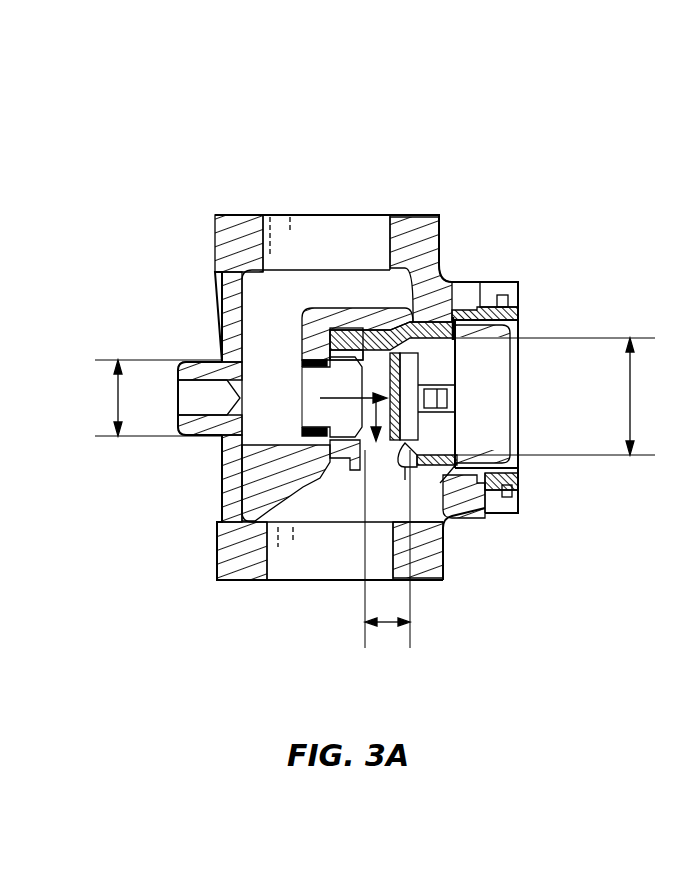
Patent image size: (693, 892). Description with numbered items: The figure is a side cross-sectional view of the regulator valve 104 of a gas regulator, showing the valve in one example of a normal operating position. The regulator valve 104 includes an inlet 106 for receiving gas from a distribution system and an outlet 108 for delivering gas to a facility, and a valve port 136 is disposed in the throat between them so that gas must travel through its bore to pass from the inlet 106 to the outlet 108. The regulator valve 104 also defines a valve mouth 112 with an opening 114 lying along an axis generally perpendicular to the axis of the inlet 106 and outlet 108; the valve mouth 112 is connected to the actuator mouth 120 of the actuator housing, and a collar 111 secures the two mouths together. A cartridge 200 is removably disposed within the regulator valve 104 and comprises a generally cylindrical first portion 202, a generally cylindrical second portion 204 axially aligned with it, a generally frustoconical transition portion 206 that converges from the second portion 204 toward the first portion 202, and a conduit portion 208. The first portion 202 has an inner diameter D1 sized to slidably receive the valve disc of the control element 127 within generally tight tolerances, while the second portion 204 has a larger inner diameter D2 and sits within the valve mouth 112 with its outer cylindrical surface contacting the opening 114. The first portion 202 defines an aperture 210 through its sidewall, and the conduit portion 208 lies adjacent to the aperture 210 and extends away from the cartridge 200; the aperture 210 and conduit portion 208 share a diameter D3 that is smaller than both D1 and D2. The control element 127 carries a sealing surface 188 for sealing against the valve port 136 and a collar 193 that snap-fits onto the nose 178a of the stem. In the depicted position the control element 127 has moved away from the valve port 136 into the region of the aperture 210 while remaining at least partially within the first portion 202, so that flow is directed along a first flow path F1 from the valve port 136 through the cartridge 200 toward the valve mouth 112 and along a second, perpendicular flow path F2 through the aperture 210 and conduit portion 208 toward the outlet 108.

The regulator valve 104 is at (436, 205).
The inlet 106 is at (362, 228).
The outlet 108 is at (300, 568).
The collar 111 is at (512, 513).
The valve mouth 112 is at (467, 505).
The opening 114 is at (505, 298).
The actuator mouth 120 is at (518, 308).
The control element 127 is at (430, 367).
The valve port 136 is at (313, 382).
The nose 178a is at (437, 403).
The sealing surface 188 is at (330, 340).
The collar 193 is at (440, 378).
The cartridge 200 is at (368, 328).
The first portion 202 is at (355, 345).
The second portion 204 is at (433, 327).
The transition portion 206 is at (397, 327).
The conduit portion 208 is at (350, 460).
The aperture 210 is at (407, 443).
The arrow F1 is at (363, 397).
The arrow F2 is at (373, 417).
The inner diameter D1 is at (116, 400).
The inner diameter D2 is at (633, 397).
The diameter D3 is at (383, 626).